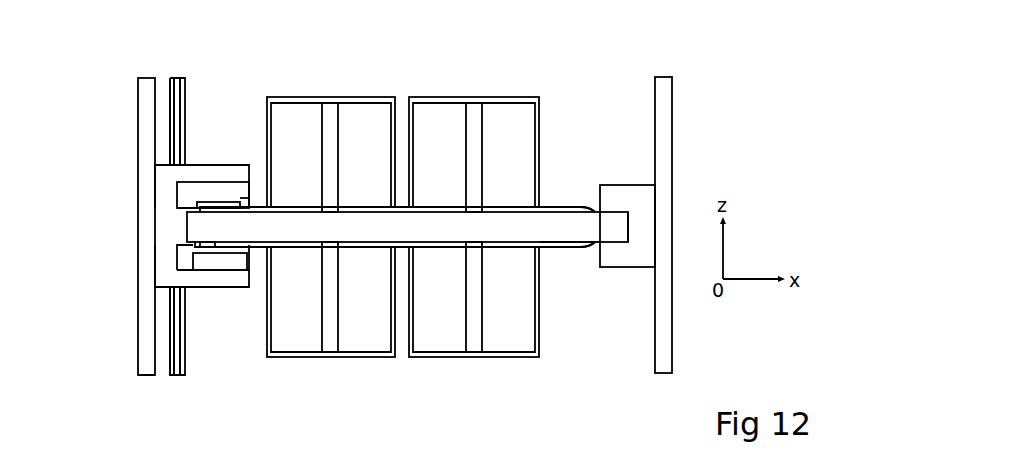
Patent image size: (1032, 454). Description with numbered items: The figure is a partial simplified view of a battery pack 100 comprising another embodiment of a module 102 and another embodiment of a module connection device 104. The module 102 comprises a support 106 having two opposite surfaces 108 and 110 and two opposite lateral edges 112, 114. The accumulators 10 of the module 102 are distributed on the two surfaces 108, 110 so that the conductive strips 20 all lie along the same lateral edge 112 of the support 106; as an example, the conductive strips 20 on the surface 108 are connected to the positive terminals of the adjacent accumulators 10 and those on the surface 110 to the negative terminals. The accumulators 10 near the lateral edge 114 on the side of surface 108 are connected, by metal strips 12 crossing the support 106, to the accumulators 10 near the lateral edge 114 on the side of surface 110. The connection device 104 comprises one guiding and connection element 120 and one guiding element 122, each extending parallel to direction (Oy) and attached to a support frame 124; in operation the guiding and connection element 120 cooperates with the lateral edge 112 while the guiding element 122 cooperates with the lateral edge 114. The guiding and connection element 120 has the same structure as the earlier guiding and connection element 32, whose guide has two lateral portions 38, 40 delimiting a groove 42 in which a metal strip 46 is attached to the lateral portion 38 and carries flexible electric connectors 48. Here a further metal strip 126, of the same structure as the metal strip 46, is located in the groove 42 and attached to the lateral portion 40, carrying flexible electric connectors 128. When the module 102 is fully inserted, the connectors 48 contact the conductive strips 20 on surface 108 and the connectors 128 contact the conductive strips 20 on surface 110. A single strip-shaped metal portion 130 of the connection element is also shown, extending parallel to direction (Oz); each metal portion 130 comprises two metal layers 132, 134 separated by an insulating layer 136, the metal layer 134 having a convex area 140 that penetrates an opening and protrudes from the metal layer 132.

The battery pack 100 is at (558, 36).
The module 102 is at (546, 122).
The accumulators 10 is at (530, 150).
The metal strips 12 is at (331, 97).
The module connection device 104 is at (131, 110).
The support frame 124 is at (665, 93).
The metal portions 130 is at (194, 82).
The metal layer 132 is at (183, 96).
The metal layer 134 is at (170, 82).
The insulating layer 136 is at (181, 110).
The guiding and connection element 32 is at (158, 162).
The metal strip 46 is at (200, 193).
The lateral portion 38 is at (217, 176).
The flexible electric connectors 48 is at (232, 202).
The groove 42 is at (193, 203).
The conductive strips 20 is at (254, 205).
The lateral edge 112 is at (205, 232).
The support 106 is at (562, 228).
The surface 108 is at (594, 210).
The surface 110 is at (596, 246).
The lateral edge 114 is at (618, 223).
The lateral portion 40 is at (206, 294).
The convex area 140 is at (192, 257).
The guiding and connection element 120 is at (203, 280).
The metal strip 126 is at (230, 272).
The flexible electric connectors 128 is at (243, 272).
The guiding element 122 is at (630, 195).